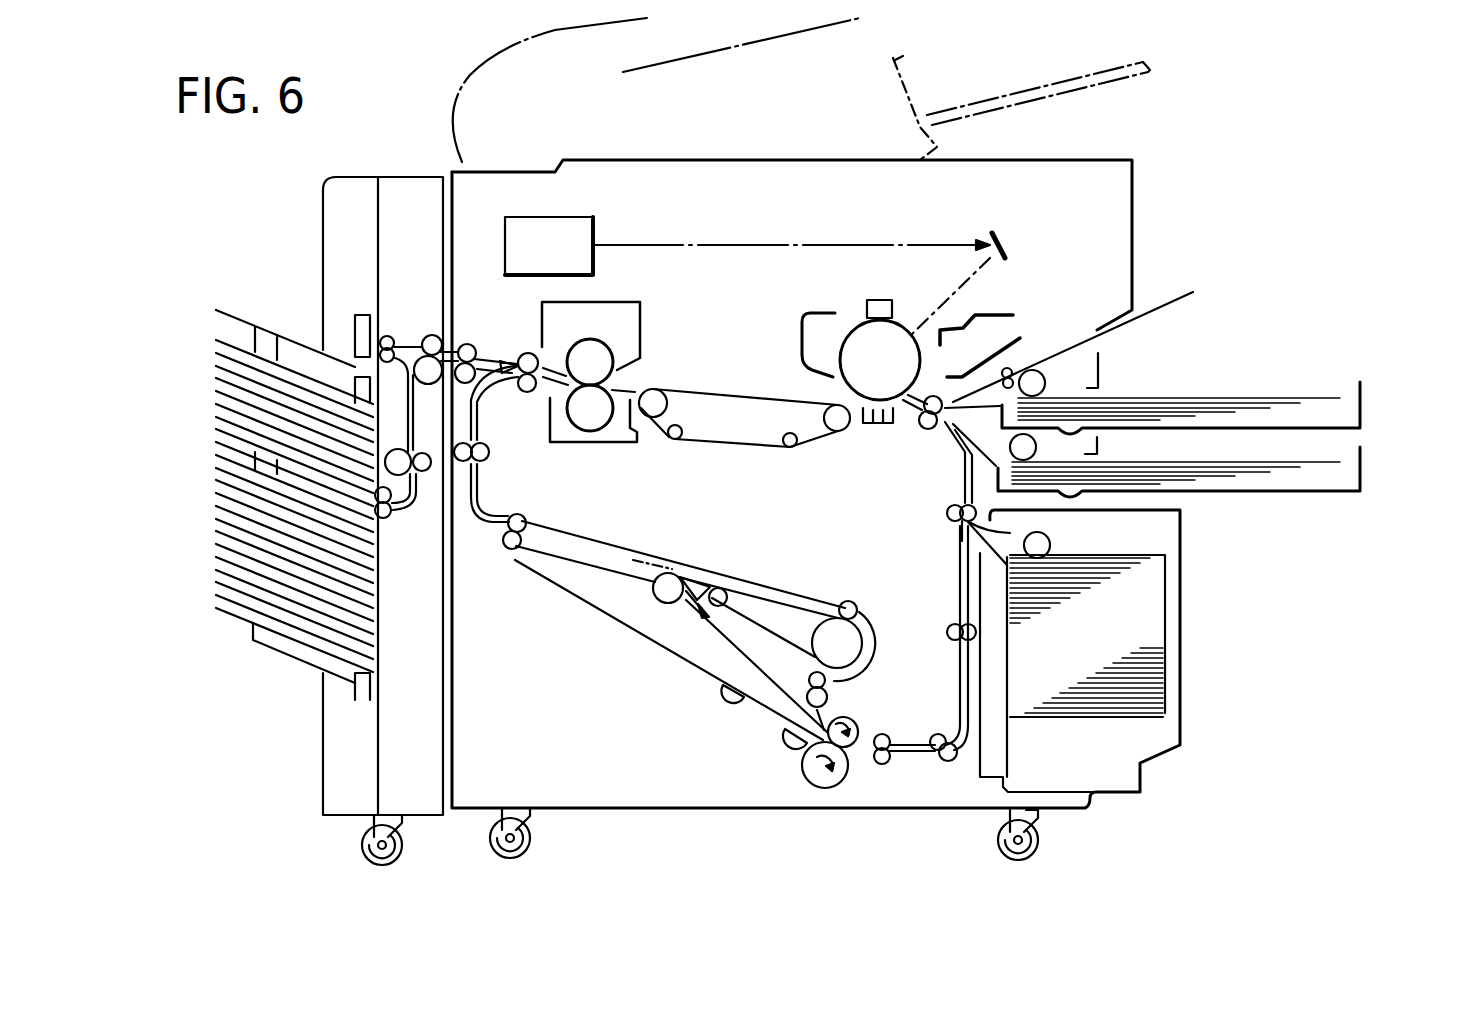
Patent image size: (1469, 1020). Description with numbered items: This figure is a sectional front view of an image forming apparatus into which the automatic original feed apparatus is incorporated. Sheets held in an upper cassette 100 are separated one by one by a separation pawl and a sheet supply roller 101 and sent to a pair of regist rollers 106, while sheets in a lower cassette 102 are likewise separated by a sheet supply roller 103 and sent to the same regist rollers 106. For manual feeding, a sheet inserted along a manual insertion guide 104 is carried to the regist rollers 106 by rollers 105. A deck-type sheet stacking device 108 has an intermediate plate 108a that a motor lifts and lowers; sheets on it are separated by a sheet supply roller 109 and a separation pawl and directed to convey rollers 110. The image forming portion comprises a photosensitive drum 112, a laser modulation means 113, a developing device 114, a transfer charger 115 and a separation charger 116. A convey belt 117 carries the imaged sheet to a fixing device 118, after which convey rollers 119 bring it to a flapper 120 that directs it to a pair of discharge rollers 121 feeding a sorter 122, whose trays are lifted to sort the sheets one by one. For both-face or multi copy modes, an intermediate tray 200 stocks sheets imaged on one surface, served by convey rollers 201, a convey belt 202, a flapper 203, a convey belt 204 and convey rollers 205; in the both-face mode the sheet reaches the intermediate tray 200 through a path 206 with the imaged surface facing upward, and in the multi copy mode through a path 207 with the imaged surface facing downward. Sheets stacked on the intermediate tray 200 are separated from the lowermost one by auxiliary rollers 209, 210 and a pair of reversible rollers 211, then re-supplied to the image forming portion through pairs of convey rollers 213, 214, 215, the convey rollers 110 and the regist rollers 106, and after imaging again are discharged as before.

The upper cassette 100 is at (1362, 403).
The sheet supply roller 101 is at (1046, 380).
The lower cassette 102 is at (1362, 466).
The sheet supply roller 103 is at (1037, 449).
The manual insertion guide 104 is at (1170, 302).
The rollers 105 is at (1026, 371).
The pair of regist rollers 106 is at (930, 428).
The sheet stacking device 108 is at (1170, 637).
The intermediate plate 108a is at (1156, 712).
The sheet supply roller 109 is at (1050, 536).
The convey rollers 110 is at (947, 516).
The photosensitive drum 112 is at (858, 322).
The laser modulation means 113 is at (545, 238).
The developing device 114 is at (997, 357).
The transfer charger 115 is at (888, 426).
The separation charger 116 is at (863, 422).
The convey belt 117 is at (746, 396).
The fixing device 118 is at (632, 334).
The convey rollers 119 is at (527, 394).
The flapper 120 is at (493, 368).
The pair of discharge rollers 121 is at (468, 342).
The sorter 122 is at (218, 388).
The intermediate tray 200 is at (617, 622).
The convey rollers 201 is at (489, 457).
The convey belt 202 is at (590, 546).
The flapper 203 is at (698, 580).
The convey belt 204 is at (810, 600).
The convey rollers 205 is at (809, 679).
The path 206 is at (866, 648).
The path 207 is at (692, 602).
The auxiliary roller 209 is at (733, 700).
The auxiliary roller 210 is at (791, 745).
The pair of reversible rollers 211 is at (850, 803).
The pair of convey rollers 213 is at (885, 762).
The pair of convey rollers 214 is at (938, 738).
The pair of convey rollers 215 is at (950, 628).